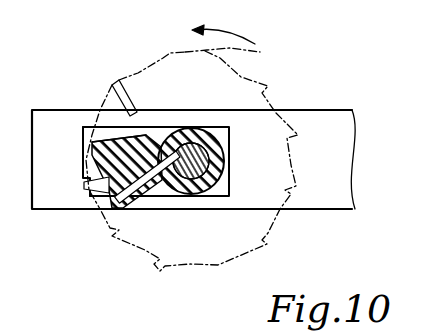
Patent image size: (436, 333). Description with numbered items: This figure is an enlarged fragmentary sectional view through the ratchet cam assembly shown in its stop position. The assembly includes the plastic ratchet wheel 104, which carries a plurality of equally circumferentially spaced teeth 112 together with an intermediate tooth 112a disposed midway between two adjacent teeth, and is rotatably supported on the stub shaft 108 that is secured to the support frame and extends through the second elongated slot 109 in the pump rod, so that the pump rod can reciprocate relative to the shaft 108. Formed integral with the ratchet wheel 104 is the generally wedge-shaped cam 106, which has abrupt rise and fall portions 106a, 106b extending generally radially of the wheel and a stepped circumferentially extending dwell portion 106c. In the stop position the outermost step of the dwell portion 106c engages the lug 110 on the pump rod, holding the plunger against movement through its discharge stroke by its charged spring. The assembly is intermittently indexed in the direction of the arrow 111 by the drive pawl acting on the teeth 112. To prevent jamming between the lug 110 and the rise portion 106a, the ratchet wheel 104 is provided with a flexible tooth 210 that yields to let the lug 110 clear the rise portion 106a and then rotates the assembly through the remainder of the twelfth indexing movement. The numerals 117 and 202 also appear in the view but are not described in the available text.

The ratchet wheel 104 is at (170, 62).
The cam 106 is at (109, 200).
The rise portion 106a is at (140, 198).
The fall portion 106b is at (143, 140).
The dwell portion 106c is at (100, 188).
The stub shaft 108 is at (226, 138).
The second elongated slot 109 is at (225, 127).
The lug 110 is at (82, 155).
The arrow 111 is at (223, 24).
The teeth 112 is at (160, 270).
The intermediate tooth 112a is at (242, 57).
The housing 117 is at (74, 118).
The cable kink 202 is at (280, 94).
The flexible tooth 210 is at (118, 80).